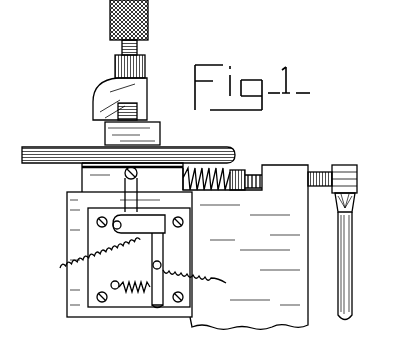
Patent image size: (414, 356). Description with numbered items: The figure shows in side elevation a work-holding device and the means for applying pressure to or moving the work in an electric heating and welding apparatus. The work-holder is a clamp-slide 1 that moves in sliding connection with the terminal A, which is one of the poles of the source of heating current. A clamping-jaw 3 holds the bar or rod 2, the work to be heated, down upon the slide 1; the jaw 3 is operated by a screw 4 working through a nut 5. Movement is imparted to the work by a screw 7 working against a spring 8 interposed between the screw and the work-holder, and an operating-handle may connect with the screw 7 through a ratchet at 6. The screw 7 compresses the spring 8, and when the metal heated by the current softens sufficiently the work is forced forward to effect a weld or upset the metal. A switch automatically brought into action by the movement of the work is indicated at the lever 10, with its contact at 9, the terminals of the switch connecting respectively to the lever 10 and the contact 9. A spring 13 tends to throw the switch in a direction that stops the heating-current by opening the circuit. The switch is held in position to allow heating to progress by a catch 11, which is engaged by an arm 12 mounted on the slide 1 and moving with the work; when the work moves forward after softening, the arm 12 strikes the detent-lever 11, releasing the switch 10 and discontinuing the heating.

The clamp-slide 1 is at (90, 178).
The bar or rod 2 is at (55, 157).
The clamping-jaw 3 is at (160, 133).
The screw 4 is at (137, 106).
The nut 5 is at (145, 65).
The ratchet 6 is at (357, 178).
The screw 7 is at (317, 172).
The spring 8 is at (237, 172).
The contact 9 is at (133, 263).
The switch lever 10 is at (165, 273).
The catch 11 is at (112, 238).
The arm 12 is at (137, 177).
The spring 13 is at (155, 262).
The terminal A is at (261, 315).